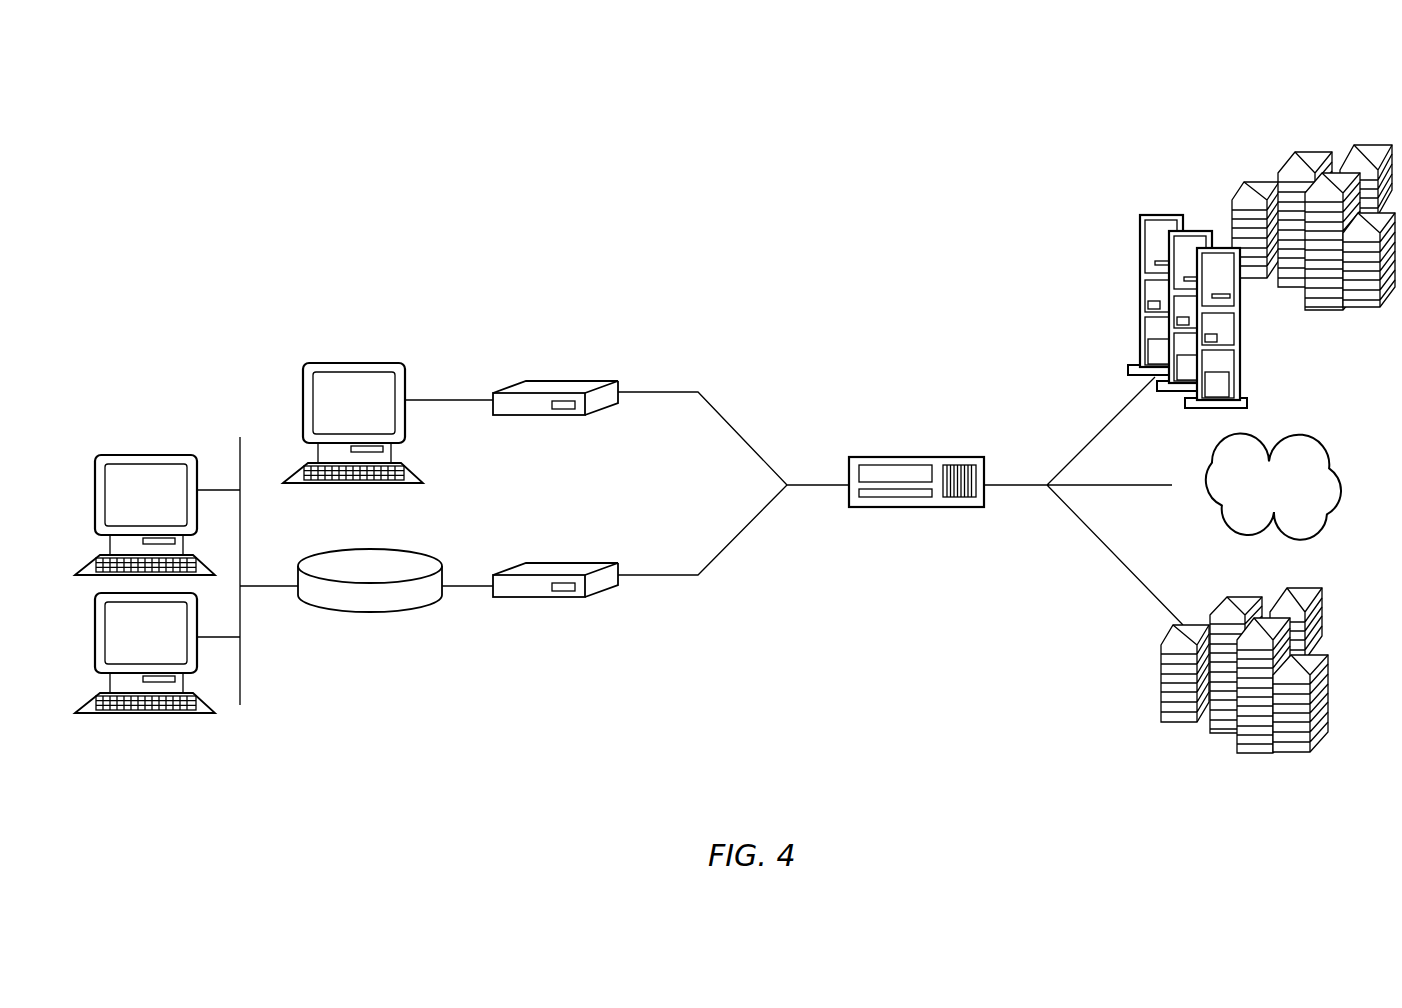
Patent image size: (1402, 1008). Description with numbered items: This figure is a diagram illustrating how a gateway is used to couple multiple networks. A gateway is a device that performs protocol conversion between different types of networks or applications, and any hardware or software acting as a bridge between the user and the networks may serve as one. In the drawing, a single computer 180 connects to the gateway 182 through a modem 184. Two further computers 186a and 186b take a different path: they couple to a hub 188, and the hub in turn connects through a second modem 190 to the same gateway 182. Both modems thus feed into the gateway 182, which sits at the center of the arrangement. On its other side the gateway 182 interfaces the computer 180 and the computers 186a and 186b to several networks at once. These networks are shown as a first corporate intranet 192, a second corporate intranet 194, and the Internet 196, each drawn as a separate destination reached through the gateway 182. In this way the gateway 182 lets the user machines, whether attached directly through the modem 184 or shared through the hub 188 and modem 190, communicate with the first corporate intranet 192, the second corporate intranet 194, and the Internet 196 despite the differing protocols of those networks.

The computer 180 is at (352, 363).
The gateway 182 is at (916, 508).
The modem 184 is at (558, 381).
The computer 186a is at (143, 455).
The computer 186b is at (145, 713).
The hub 188 is at (368, 613).
The modem 190 is at (555, 598).
The first corporate intranet 192 is at (1315, 152).
The second corporate intranet 194 is at (1290, 753).
The Internet 196 is at (1320, 432).